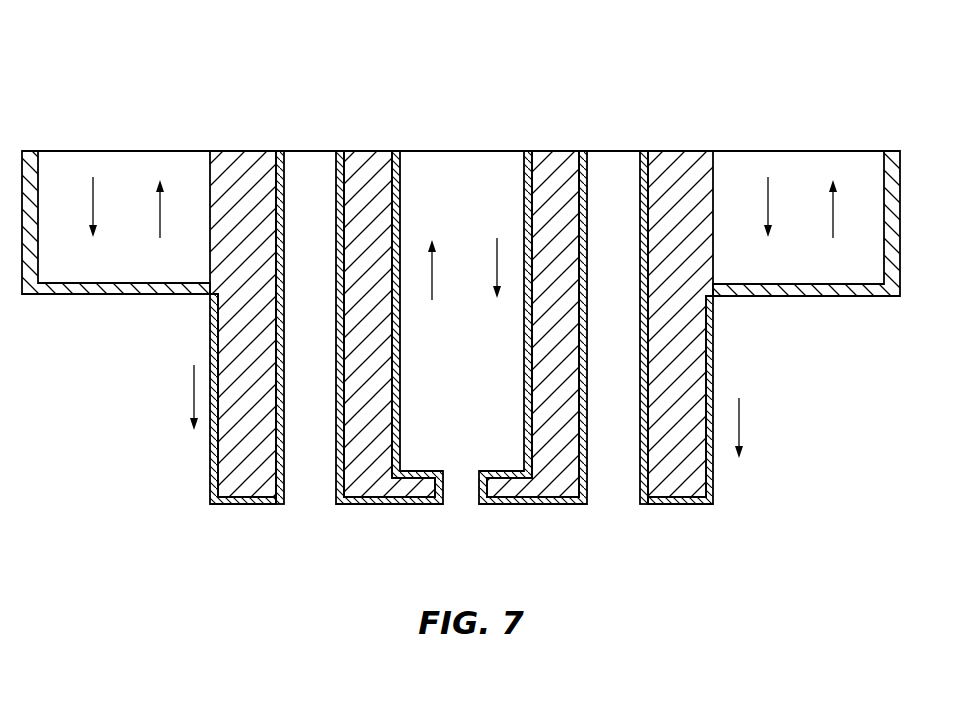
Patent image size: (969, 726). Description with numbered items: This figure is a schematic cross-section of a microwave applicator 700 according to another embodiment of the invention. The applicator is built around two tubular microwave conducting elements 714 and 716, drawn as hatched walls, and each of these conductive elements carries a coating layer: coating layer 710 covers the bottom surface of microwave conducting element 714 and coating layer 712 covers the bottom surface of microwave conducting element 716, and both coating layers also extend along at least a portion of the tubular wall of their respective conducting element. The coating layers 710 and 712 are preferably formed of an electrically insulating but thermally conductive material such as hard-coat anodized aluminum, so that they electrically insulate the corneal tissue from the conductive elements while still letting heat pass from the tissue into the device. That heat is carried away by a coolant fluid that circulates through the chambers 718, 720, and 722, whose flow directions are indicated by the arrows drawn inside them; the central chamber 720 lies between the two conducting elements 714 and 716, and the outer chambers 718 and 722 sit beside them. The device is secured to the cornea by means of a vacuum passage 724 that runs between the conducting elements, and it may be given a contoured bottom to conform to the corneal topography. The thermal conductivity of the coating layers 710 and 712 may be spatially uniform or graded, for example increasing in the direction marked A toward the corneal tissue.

The microwave applicator 700 is at (185, 86).
The coating layer 710 is at (210, 487).
The coating layer 712 is at (393, 506).
The microwave conducting element 714 is at (258, 155).
The microwave conducting element 716 is at (373, 150).
The chamber 718 is at (100, 162).
The chamber 720 is at (460, 168).
The chamber 722 is at (792, 162).
The vacuum passage 724 is at (312, 490).